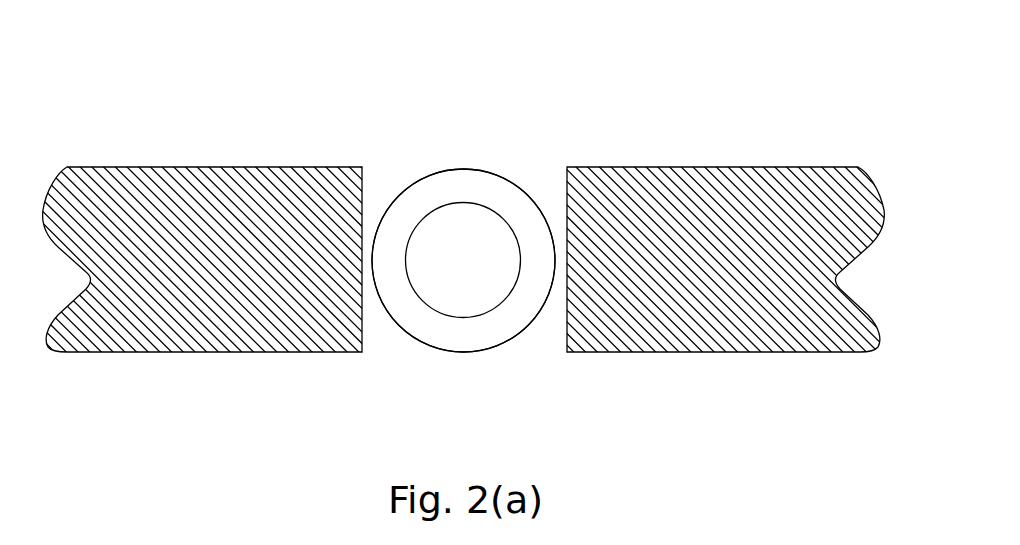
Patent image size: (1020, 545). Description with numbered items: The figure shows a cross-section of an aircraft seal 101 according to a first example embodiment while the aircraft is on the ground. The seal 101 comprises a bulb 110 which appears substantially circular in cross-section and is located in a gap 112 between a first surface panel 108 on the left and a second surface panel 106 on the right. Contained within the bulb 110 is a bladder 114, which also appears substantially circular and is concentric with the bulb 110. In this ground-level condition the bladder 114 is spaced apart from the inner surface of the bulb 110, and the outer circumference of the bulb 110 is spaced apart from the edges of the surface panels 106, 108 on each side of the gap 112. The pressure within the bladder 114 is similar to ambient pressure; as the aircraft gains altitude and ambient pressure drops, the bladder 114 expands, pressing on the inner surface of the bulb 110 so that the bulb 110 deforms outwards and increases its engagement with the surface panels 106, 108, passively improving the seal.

The seal 101 is at (510, 230).
The second surface panel 106 is at (798, 302).
The first surface panel 108 is at (163, 295).
The bulb 110 is at (438, 172).
The gap 112 is at (535, 350).
The bladder 114 is at (440, 273).